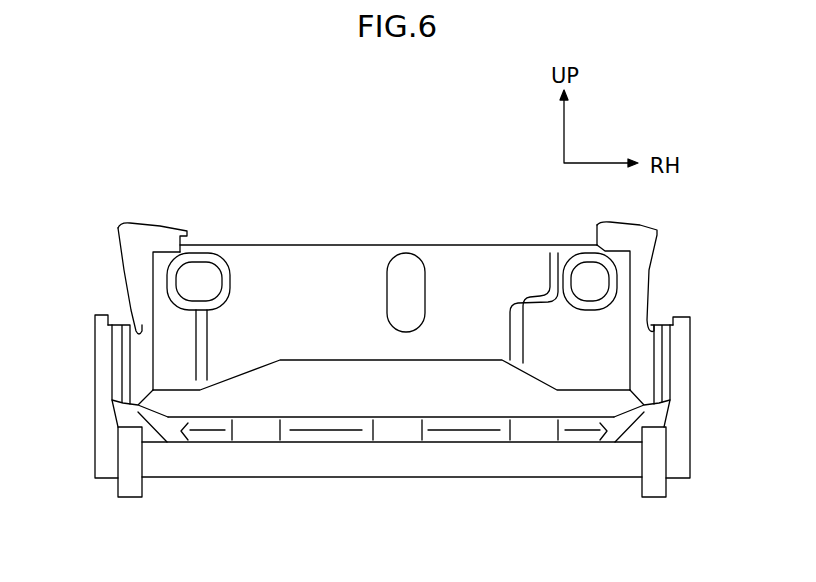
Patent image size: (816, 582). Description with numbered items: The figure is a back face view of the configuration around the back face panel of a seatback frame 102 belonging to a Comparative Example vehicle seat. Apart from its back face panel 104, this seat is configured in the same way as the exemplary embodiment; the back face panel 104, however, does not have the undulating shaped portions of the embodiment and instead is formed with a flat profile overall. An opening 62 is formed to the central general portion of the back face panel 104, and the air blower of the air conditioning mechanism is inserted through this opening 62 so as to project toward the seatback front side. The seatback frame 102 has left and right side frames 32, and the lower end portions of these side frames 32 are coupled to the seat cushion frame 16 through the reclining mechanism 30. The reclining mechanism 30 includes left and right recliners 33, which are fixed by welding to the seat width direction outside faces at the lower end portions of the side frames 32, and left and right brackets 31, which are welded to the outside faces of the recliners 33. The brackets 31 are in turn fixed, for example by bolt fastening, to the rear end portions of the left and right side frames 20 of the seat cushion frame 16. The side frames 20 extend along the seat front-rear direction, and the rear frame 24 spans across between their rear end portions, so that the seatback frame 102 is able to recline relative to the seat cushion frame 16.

The seatback frame 102 is at (415, 181).
The back face panel 104 is at (347, 243).
The opening 62 is at (415, 248).
The side frame 32 is at (118, 249).
The recliner 33 is at (115, 322).
The bracket 31 is at (95, 404).
The reclining mechanism 30 is at (704, 367).
The seat cushion frame 16 is at (334, 479).
The rear frame 24 is at (455, 478).
The side frame 20 is at (131, 498).